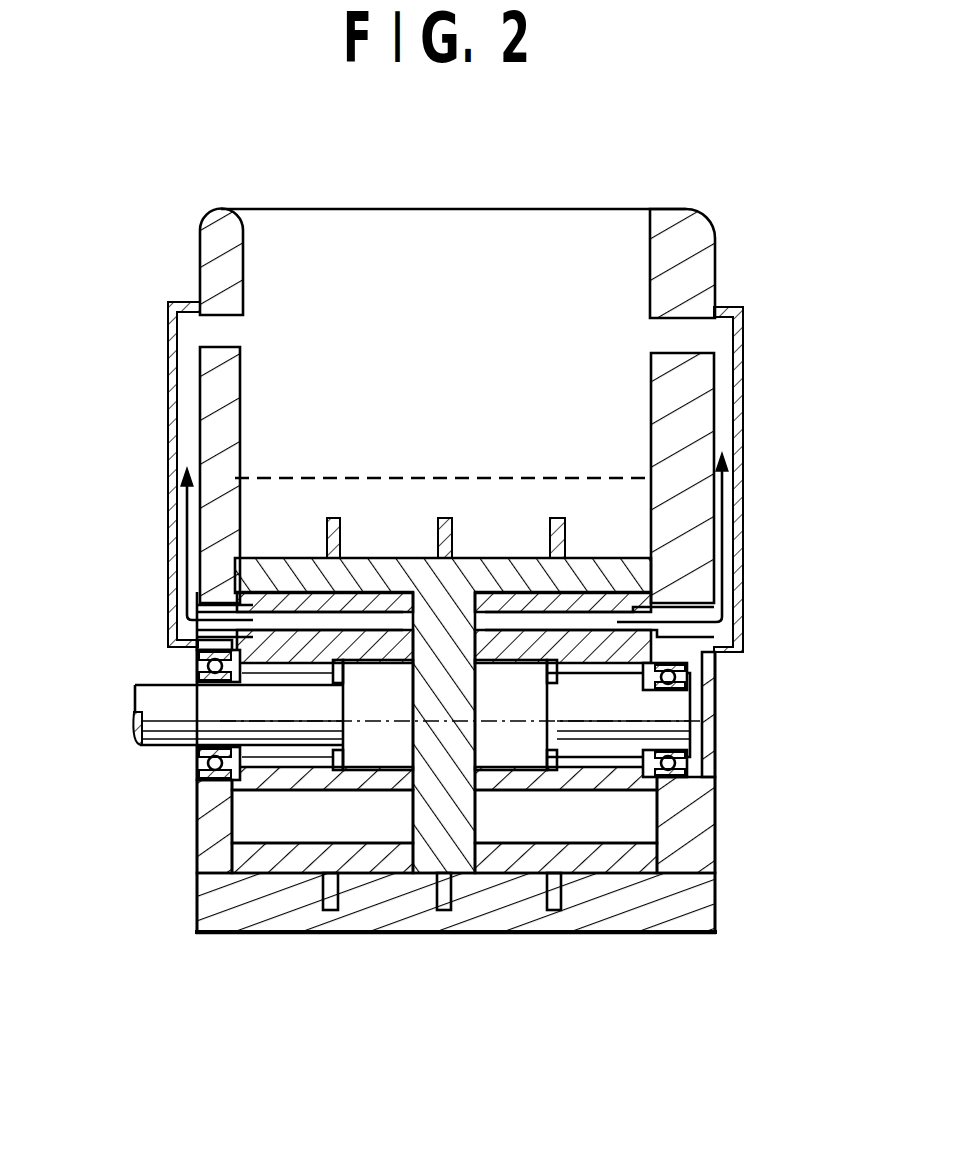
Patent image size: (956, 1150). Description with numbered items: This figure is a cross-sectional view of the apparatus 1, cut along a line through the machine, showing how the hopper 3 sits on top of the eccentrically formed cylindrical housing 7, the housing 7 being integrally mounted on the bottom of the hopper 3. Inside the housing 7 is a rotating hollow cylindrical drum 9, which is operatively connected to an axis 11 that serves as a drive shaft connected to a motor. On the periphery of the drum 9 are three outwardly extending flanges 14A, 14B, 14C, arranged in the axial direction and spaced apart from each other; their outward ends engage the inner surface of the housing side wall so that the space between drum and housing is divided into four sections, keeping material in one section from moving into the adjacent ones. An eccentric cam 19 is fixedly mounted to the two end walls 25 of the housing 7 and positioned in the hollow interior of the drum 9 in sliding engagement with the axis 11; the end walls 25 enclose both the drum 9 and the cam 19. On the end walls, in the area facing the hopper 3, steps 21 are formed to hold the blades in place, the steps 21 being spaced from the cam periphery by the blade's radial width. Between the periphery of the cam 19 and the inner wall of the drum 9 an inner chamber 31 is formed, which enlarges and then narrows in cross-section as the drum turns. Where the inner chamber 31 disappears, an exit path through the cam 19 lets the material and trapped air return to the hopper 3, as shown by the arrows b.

The apparatus 1 is at (641, 185).
The hopper 3 is at (677, 248).
The cylindrical housing 7 is at (258, 905).
The hollow cylindrical drum 9 is at (490, 575).
The axis 11 is at (167, 710).
The flange 14A is at (332, 518).
The flange 14B is at (445, 518).
The flange 14C is at (557, 518).
The eccentric cam 19 is at (270, 775).
The step 21 is at (650, 488).
The end wall 25 is at (683, 860).
The inner chamber 31 is at (636, 822).
The arrow b is at (175, 572).